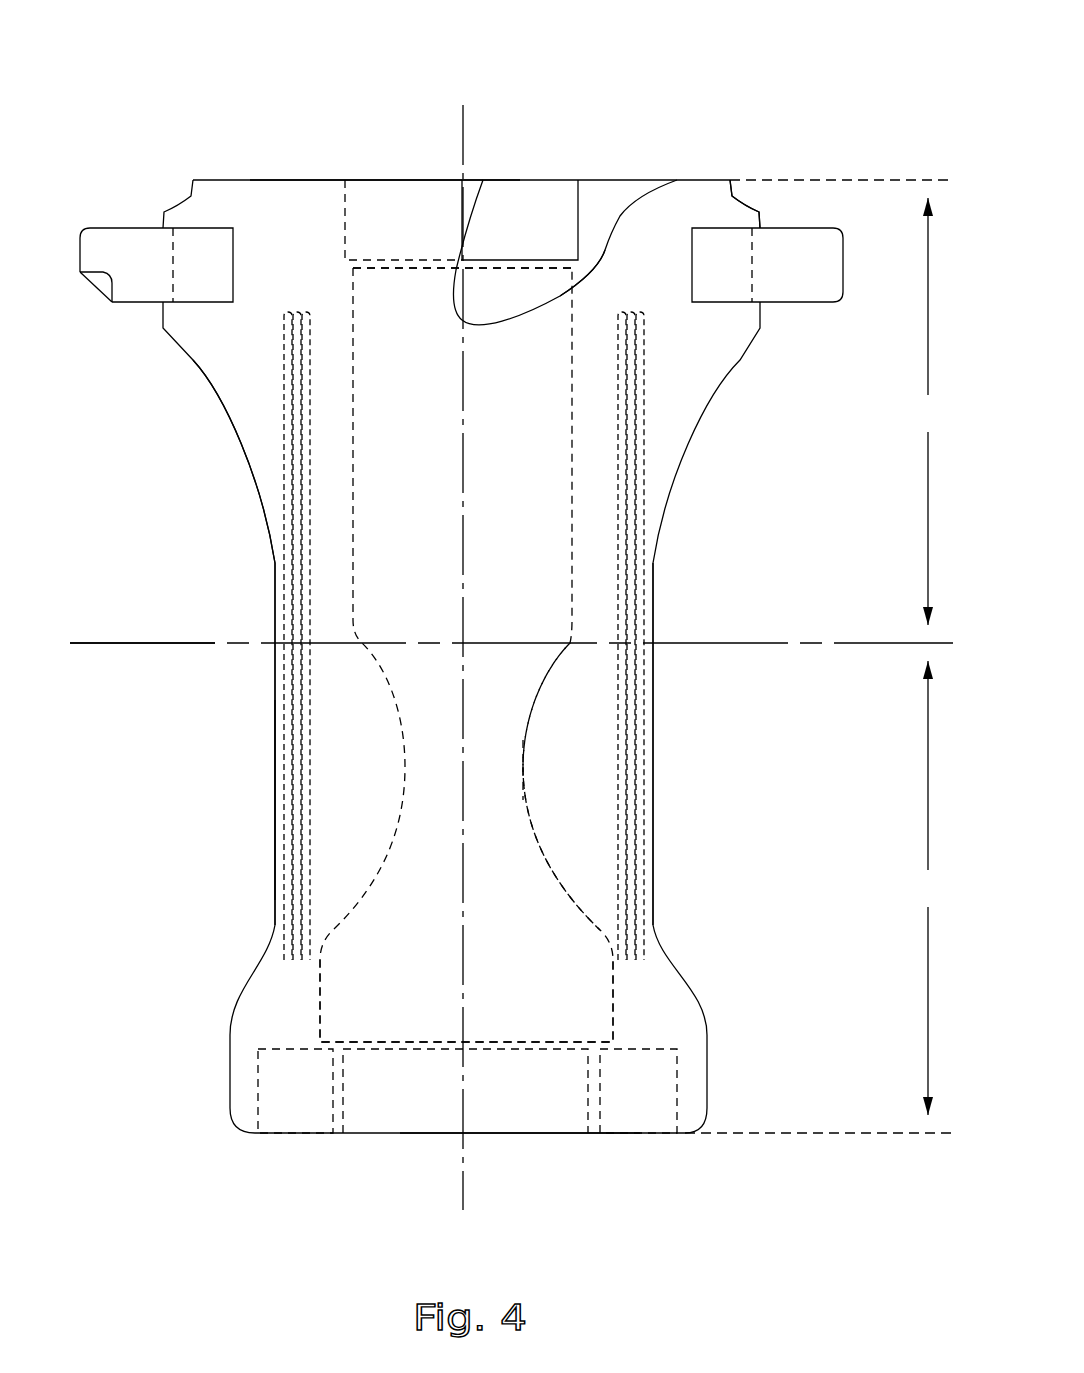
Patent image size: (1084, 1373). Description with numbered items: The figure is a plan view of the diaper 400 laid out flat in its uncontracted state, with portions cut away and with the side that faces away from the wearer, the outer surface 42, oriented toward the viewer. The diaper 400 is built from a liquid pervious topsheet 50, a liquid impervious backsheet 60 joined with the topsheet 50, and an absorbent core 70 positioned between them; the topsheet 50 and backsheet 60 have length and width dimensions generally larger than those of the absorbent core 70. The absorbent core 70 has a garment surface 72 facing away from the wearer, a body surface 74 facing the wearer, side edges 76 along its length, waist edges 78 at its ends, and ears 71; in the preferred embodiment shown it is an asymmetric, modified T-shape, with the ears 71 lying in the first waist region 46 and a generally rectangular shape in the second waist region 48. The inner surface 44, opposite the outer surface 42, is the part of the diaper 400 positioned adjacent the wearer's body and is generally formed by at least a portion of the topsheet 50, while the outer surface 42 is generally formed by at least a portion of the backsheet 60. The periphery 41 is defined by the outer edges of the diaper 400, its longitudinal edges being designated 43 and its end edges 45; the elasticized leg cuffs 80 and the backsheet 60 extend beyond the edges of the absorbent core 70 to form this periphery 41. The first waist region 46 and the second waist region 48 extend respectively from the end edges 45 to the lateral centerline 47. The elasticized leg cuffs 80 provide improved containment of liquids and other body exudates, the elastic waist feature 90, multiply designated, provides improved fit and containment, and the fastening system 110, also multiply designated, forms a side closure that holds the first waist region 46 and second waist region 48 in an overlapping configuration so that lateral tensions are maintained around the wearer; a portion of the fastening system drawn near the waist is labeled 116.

The diaper 400 is at (690, 135).
The fastening system 110 is at (190, 228).
The fastening tab notch 116 is at (730, 208).
The end edges 45 is at (297, 180).
The elastic waist feature 90 is at (418, 220).
The waist edges 78 is at (492, 268).
The garment surface 72 is at (550, 283).
The absorbent core 70 is at (462, 287).
The topsheet 50 is at (600, 208).
The body surface 74 is at (573, 280).
The second waist region 48 is at (418, 1230).
The first waist region 46 is at (819, 897).
The inner surface 44 is at (235, 432).
The longitudinal edges 43 is at (653, 590).
The periphery 41 is at (275, 805).
The lateral centerline 47 is at (207, 644).
The outer surface 42 is at (588, 718).
The side edges 76 is at (523, 777).
The backsheet 60 is at (572, 850).
The ears 71 is at (347, 1012).
The elasticized leg cuffs 80 is at (295, 525).